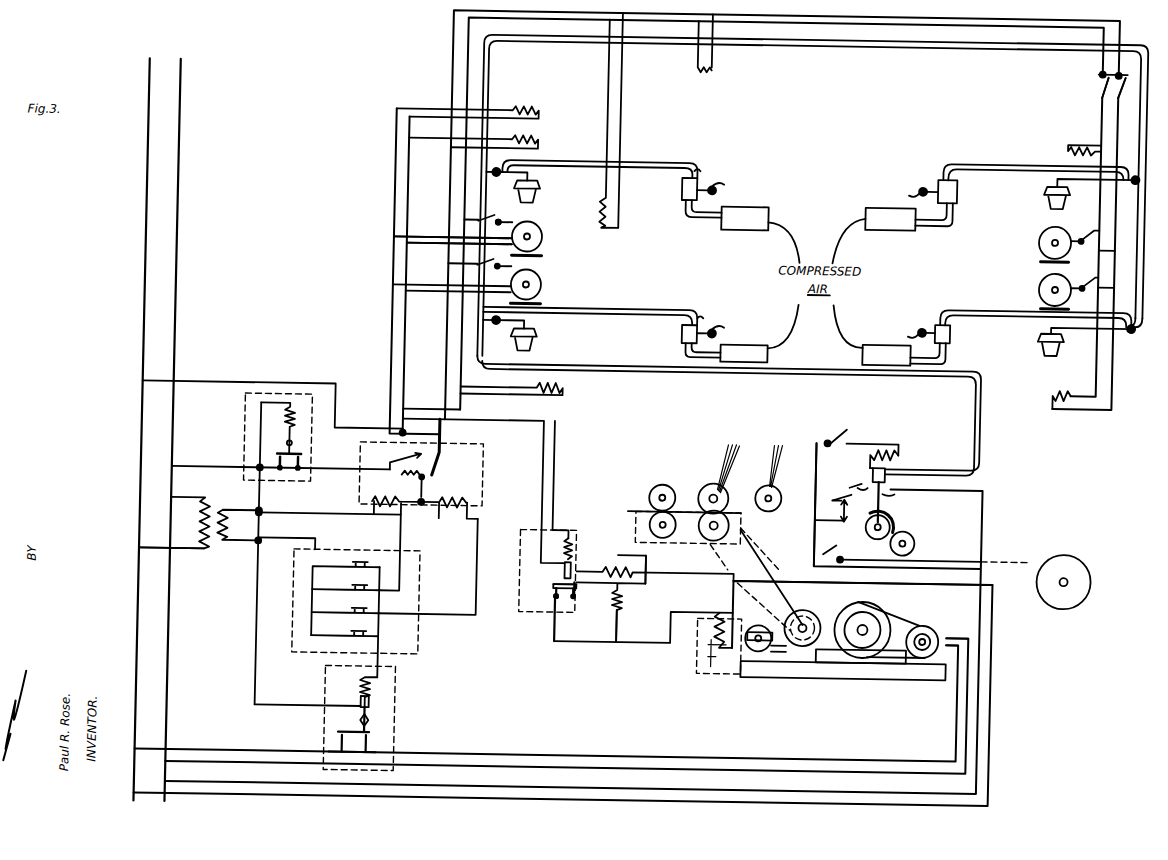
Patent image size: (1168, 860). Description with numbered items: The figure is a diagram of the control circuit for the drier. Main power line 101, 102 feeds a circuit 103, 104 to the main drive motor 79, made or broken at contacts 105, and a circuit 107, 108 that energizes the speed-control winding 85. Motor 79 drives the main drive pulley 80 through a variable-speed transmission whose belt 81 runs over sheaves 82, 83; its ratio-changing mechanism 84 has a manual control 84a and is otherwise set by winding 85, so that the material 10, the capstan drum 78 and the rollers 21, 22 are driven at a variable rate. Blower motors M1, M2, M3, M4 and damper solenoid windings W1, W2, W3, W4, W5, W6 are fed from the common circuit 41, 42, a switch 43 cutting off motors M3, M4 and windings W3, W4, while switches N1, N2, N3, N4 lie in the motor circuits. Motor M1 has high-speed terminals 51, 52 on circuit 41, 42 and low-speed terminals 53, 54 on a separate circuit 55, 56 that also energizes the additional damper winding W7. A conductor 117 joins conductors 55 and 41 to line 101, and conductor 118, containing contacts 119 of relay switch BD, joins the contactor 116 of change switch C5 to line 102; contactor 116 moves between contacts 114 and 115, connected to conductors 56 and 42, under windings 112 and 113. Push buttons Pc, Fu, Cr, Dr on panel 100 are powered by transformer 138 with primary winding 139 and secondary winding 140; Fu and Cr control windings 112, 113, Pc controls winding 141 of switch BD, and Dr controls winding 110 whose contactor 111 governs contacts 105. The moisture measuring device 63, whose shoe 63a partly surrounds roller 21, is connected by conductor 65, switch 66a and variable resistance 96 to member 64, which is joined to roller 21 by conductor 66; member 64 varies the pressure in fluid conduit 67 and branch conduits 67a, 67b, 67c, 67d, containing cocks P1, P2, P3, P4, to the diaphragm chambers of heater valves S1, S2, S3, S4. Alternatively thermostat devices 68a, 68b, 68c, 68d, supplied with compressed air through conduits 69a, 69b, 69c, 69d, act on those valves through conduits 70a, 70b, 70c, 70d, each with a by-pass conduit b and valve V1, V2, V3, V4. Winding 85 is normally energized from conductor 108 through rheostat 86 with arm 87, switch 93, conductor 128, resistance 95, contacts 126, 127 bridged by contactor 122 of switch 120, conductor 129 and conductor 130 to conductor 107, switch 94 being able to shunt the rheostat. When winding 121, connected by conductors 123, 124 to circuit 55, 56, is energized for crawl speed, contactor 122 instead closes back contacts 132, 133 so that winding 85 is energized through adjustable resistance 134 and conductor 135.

The material 10 is at (1104, 526).
The take-off roller 21 is at (886, 524).
The take-off roller 22 is at (926, 528).
The circuit conductor 41 is at (452, 318).
The circuit conductor 42 is at (467, 341).
The switch 43 is at (1098, 70).
The motor terminal 51 is at (521, 214).
The motor terminal 52 is at (507, 213).
The motor terminal 53 is at (517, 238).
The motor terminal 54 is at (463, 259).
The circuit conductor 55 is at (397, 270).
The circuit conductor 56 is at (410, 293).
The moisture content measuring device 63 is at (889, 502).
The shoe portion 63a is at (908, 508).
The relay member 64 is at (896, 458).
The conductor 65 is at (899, 491).
The conductor 66 is at (852, 507).
The switch 66a is at (857, 484).
The fluid conduit 67 is at (668, 362).
The branch conduit 67a is at (534, 168).
The branch conduit 67b is at (536, 317).
The branch conduit 67c is at (1136, 166).
The branch conduit 67d is at (1140, 315).
The thermostat device 68a is at (686, 179).
The thermostat device 68b is at (689, 330).
The thermostat device 68c is at (961, 174).
The thermostat device 68d is at (957, 319).
The compressed air conduit 69a is at (726, 210).
The compressed air conduit 69b is at (730, 350).
The compressed air conduit 69c is at (922, 214).
The compressed air conduit 69d is at (940, 351).
The fluid conduit 70a is at (686, 152).
The fluid conduit 70b is at (683, 299).
The fluid conduit 70c is at (987, 149).
The fluid conduit 70d is at (990, 290).
The capstan roller 78 is at (1104, 568).
The main drive motor 79 is at (946, 616).
The main drive pulley 80 is at (818, 597).
The belt 81 is at (862, 594).
The sheave 82 is at (862, 650).
The sheave 83 is at (812, 660).
The ratio-changing mechanism 84 is at (768, 613).
The manual control 84a is at (712, 645).
The speed-control winding 85 is at (733, 601).
The rheostat 86 is at (888, 440).
The rheostat arm 87 is at (881, 458).
The switch 93 is at (856, 422).
The switch 94 is at (901, 552).
The variable resistance 95 is at (630, 605).
The variable resistance 96 is at (834, 492).
The panel 100 is at (438, 591).
The main power line 101 is at (148, 243).
The main power line 102 is at (185, 243).
The motor circuit conductor 103 is at (590, 758).
The motor circuit conductor 104 is at (538, 738).
The contacts 105 is at (352, 752).
The circuit conductor 107 is at (656, 790).
The circuit conductor 108 is at (612, 778).
The winding 110 is at (386, 685).
The switch contactor 111 is at (384, 718).
The winding 112 is at (383, 490).
The winding 113 is at (472, 488).
The contact 114 is at (398, 460).
The contact 115 is at (452, 453).
The contactor 116 is at (425, 480).
The conductor 117 is at (310, 378).
The conductor 118 is at (205, 461).
The contacts 119 is at (312, 451).
The electro-magnetic switch 120 is at (590, 530).
The winding 121 is at (582, 530).
The contactor 122 is at (566, 580).
The conductor 123 is at (494, 403).
The conductor 124 is at (542, 412).
The contact 126 is at (566, 587).
The contact 127 is at (610, 608).
The conductor 128 is at (824, 446).
The conductor 129 is at (568, 632).
The conductor 130 is at (924, 571).
The back contact 132 is at (566, 577).
The back contact 133 is at (596, 560).
The adjustable resistance 134 is at (658, 575).
The conductor 135 is at (690, 532).
The transformer 138 is at (225, 547).
The primary winding 139 is at (211, 521).
The secondary winding 140 is at (236, 506).
The winding 141 is at (304, 412).
The solenoid winding W1 is at (538, 137).
The solenoid winding W2 is at (578, 380).
The solenoid winding W3 is at (1071, 136).
The solenoid winding W4 is at (1070, 392).
The solenoid winding W5 is at (702, 54).
The solenoid winding W6 is at (603, 192).
The additional solenoid winding W7 is at (538, 110).
The motor M1 is at (548, 227).
The motor M2 is at (548, 275).
The motor M3 is at (1044, 226).
The motor M4 is at (1045, 273).
The switch N1 is at (482, 214).
The switch N2 is at (474, 261).
The switch N3 is at (1085, 230).
The switch N4 is at (1088, 274).
The pet cock P1 is at (500, 167).
The pet cock P2 is at (503, 316).
The pet cock P3 is at (1138, 158).
The pet cock P4 is at (1142, 330).
The diaphragm valve S1 is at (544, 180).
The diaphragm valve S2 is at (544, 336).
The diaphragm valve S3 is at (1048, 176).
The diaphragm valve S4 is at (1046, 332).
The by-pass valve V1 is at (718, 185).
The by-pass valve V2 is at (718, 329).
The by-pass valve V3 is at (913, 189).
The by-pass valve V4 is at (912, 332).
The by-pass conduit b is at (702, 152).
The relay switch BD is at (292, 476).
The change switch C5 is at (495, 466).
The push-button switch Pc is at (345, 597).
The push-button switch Fu is at (345, 589).
The push-button switch Cr is at (344, 612).
The push-button switch Dr is at (344, 621).